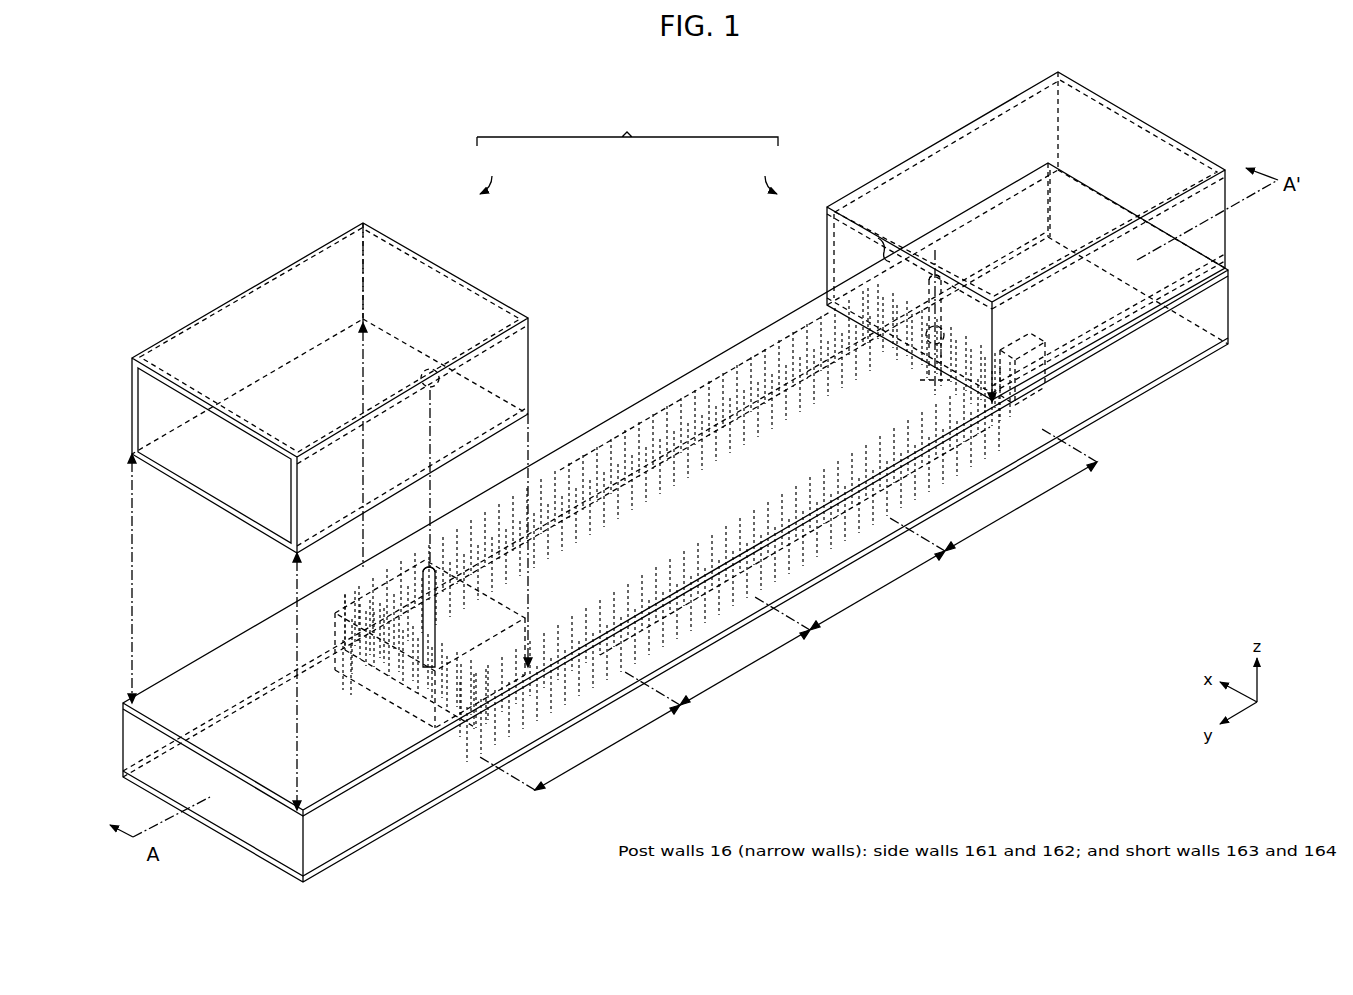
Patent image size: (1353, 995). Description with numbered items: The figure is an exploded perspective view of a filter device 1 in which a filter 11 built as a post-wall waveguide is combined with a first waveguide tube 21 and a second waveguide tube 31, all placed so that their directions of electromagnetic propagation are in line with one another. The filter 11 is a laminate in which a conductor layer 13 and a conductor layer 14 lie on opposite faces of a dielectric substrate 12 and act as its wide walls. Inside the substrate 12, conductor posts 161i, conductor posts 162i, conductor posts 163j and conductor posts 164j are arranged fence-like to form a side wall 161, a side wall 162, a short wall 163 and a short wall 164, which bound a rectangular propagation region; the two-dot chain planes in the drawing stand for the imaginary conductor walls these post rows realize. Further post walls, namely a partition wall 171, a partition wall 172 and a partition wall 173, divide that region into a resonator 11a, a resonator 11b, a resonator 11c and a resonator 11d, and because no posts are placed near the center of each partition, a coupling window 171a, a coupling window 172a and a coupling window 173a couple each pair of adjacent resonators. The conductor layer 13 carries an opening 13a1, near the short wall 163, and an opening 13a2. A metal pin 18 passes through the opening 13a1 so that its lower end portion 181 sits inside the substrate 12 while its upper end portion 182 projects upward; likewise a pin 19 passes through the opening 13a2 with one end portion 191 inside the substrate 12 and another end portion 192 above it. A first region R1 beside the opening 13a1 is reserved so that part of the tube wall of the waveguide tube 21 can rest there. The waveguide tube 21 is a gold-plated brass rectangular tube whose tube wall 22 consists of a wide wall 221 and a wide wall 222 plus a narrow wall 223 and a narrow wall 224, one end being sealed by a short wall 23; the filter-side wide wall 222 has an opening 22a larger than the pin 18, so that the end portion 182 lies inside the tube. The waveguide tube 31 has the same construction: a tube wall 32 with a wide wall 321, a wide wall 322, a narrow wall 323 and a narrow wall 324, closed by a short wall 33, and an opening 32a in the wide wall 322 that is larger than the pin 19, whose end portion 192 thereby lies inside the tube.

The filter device 1 is at (627, 132).
The filter 11 is at (632, 207).
The resonator 11a is at (607, 747).
The resonator 11b is at (745, 667).
The resonator 11c is at (877, 590).
The resonator 11d is at (1021, 506).
The substrate 12 is at (1232, 312).
The conductor layer 13 is at (1232, 276).
The opening 13a1 is at (446, 640).
The opening 13a2 is at (1002, 376).
The conductor layer 14 is at (1232, 346).
The pin 18 is at (421, 630).
The lower end portion 181 is at (384, 686).
The upper end portion 182 is at (420, 568).
The pin 19 is at (928, 298).
The end portion 191 is at (931, 392).
The end portion 192 is at (950, 280).
The waveguide tube 21 is at (492, 173).
The tube wall 22 is at (266, 264).
The wide wall 221 is at (326, 254).
The wide wall 222 is at (464, 461).
The narrow wall 223 is at (448, 478).
The narrow wall 224 is at (233, 303).
The opening 22a is at (440, 390).
The short wall 23 is at (448, 278).
The waveguide tube 31 is at (764, 173).
The tube wall 32 is at (942, 104).
The wide wall 321 is at (1017, 107).
The wide wall 322 is at (1118, 199).
The narrow wall 323 is at (1227, 168).
The narrow wall 324 is at (923, 152).
The opening 32a is at (950, 335).
The short wall 33 is at (877, 232).
The side wall 161 is at (848, 562).
The conductor posts 161i is at (782, 600).
The side wall 162 is at (612, 430).
The conductor posts 162i is at (639, 412).
The short wall 163 is at (437, 753).
The conductor posts 163j is at (372, 710).
The short wall 164 is at (1043, 410).
The conductor posts 164j is at (1019, 351).
The partition wall 171 is at (609, 600).
The coupling window 171a is at (574, 589).
The partition wall 172 is at (741, 523).
The coupling window 172a is at (704, 514).
The partition wall 173 is at (891, 440).
The coupling window 173a is at (851, 432).
The first region R1 is at (425, 826).